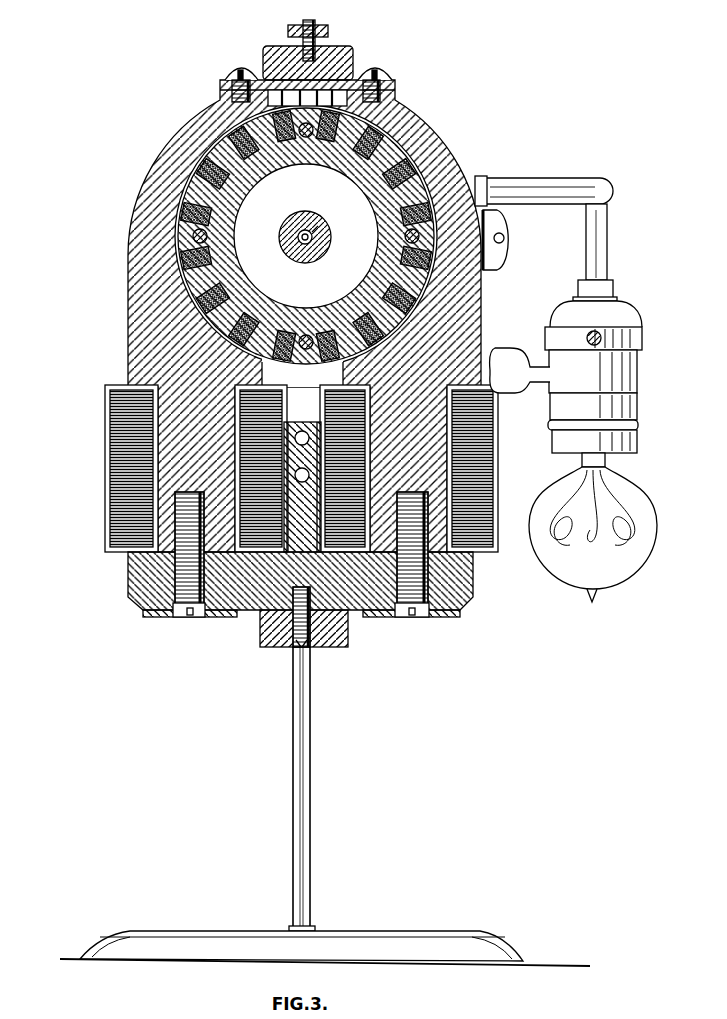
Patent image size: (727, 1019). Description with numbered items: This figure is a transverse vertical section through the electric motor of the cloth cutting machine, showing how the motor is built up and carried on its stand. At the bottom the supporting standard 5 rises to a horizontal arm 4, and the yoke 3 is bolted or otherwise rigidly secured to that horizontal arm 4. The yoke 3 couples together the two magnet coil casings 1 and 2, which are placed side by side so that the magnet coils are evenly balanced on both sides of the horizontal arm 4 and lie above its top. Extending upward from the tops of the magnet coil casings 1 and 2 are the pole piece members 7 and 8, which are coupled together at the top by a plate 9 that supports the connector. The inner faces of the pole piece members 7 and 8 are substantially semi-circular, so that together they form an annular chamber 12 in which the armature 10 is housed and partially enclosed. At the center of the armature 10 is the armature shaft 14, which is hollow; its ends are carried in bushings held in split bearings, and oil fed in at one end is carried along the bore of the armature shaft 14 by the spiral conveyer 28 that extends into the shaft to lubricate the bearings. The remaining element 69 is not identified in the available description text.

The magnet coil casing 1 is at (497, 553).
The magnet coil casing 2 is at (105, 505).
The yoke 3 is at (143, 595).
The horizontal arm 4 is at (350, 638).
The supporting standard 5 is at (312, 788).
The pole piece member 7 is at (453, 327).
The pole piece member 8 is at (155, 340).
The plate 9 is at (380, 74).
The armature 10 is at (180, 235).
The annular chamber 12 is at (262, 207).
The armature shaft 14 is at (288, 240).
The spiral conveyer 28 is at (322, 227).
The terminal block 69 is at (263, 52).